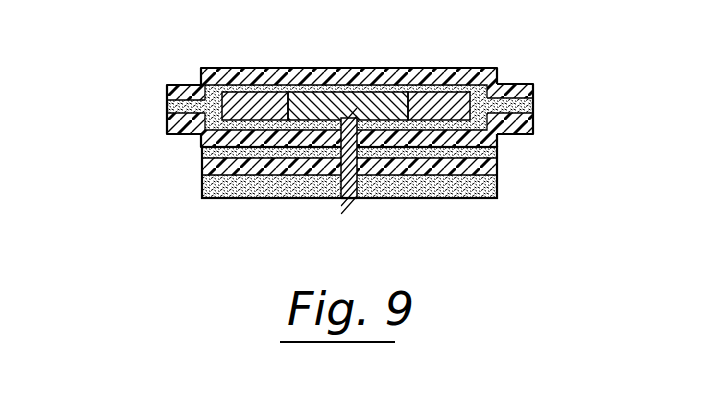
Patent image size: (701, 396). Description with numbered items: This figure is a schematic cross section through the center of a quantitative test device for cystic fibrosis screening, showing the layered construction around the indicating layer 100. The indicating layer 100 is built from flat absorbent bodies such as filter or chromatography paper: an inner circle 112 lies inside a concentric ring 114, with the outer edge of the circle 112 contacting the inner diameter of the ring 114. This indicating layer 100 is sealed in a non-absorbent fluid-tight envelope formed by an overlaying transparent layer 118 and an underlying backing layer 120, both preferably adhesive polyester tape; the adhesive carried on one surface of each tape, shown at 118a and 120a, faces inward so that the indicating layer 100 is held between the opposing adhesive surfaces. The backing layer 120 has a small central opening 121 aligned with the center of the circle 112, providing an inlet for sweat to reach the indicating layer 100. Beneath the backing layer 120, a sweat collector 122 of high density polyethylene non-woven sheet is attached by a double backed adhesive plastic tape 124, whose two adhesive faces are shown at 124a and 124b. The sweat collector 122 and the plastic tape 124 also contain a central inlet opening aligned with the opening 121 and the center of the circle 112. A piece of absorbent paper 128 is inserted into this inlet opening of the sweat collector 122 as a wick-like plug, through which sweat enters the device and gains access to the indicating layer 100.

The indicating layer 100 is at (336, 146).
The inner circle 112 is at (348, 105).
The concentric ring 114 is at (250, 95).
The transparent layer 118 is at (167, 93).
The adhesive surface 118a is at (167, 103).
The backing layer 120 is at (167, 123).
The adhesive surface 120a is at (167, 110).
The central opening 121 is at (357, 198).
The sweat collector 122 is at (347, 208).
The plastic tape 124 is at (202, 172).
The adhesive 124a is at (202, 153).
The adhesive 124b is at (202, 188).
The absorbent paper 128 is at (343, 200).